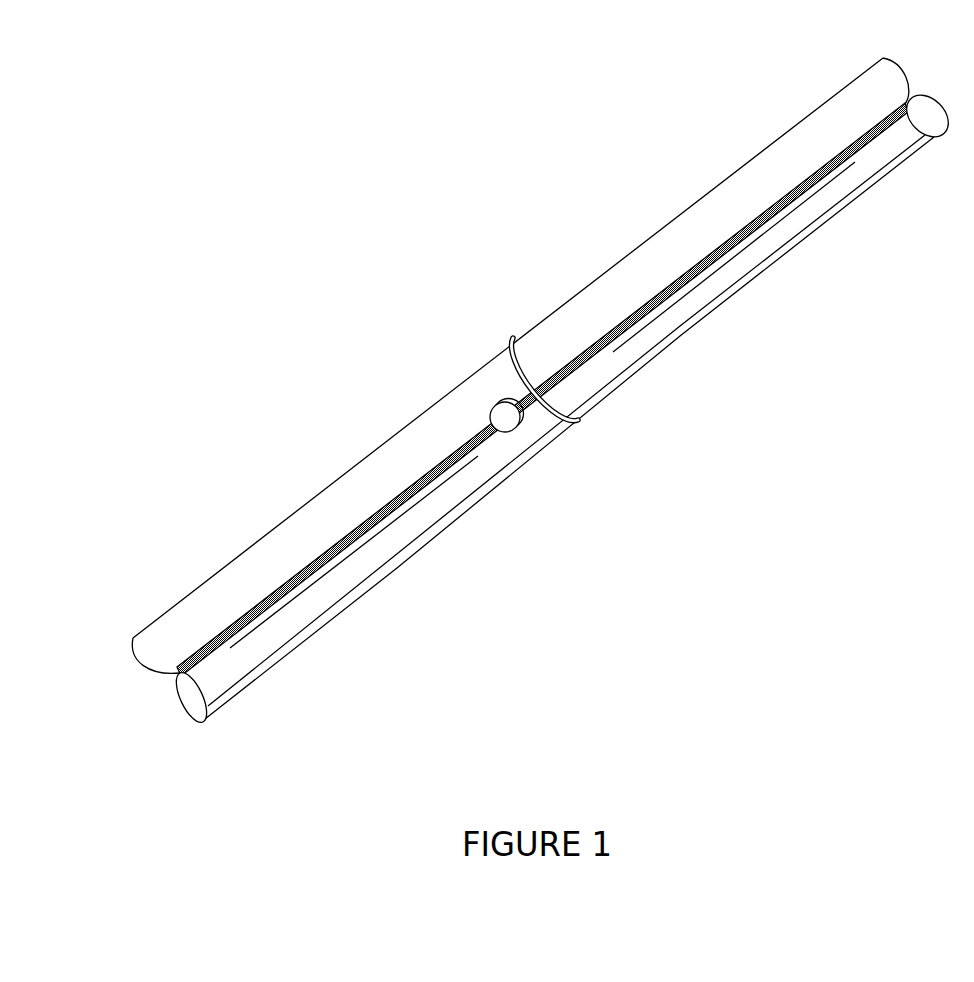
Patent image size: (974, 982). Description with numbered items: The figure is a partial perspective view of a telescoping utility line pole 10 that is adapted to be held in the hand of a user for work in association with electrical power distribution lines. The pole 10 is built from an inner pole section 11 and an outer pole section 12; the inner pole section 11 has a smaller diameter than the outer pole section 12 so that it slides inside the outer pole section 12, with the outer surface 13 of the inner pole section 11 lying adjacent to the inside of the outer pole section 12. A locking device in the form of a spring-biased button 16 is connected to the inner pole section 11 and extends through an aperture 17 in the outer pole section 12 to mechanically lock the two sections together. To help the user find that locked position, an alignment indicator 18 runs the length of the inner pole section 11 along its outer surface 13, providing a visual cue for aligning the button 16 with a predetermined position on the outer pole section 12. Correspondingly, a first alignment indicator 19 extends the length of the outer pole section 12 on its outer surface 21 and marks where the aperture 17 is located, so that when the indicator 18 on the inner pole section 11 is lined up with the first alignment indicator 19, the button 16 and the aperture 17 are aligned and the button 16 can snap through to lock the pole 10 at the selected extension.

The telescoping utility line pole 10 is at (405, 113).
The inner pole section 11 is at (722, 190).
The outer pole section 12 is at (450, 393).
The outer surface 13 is at (643, 270).
The spring-biased button 16 is at (517, 427).
The aperture 17 is at (520, 415).
The alignment indicator 18 is at (698, 272).
The first alignment indicator 19 is at (365, 527).
The outer surface 21 is at (258, 557).